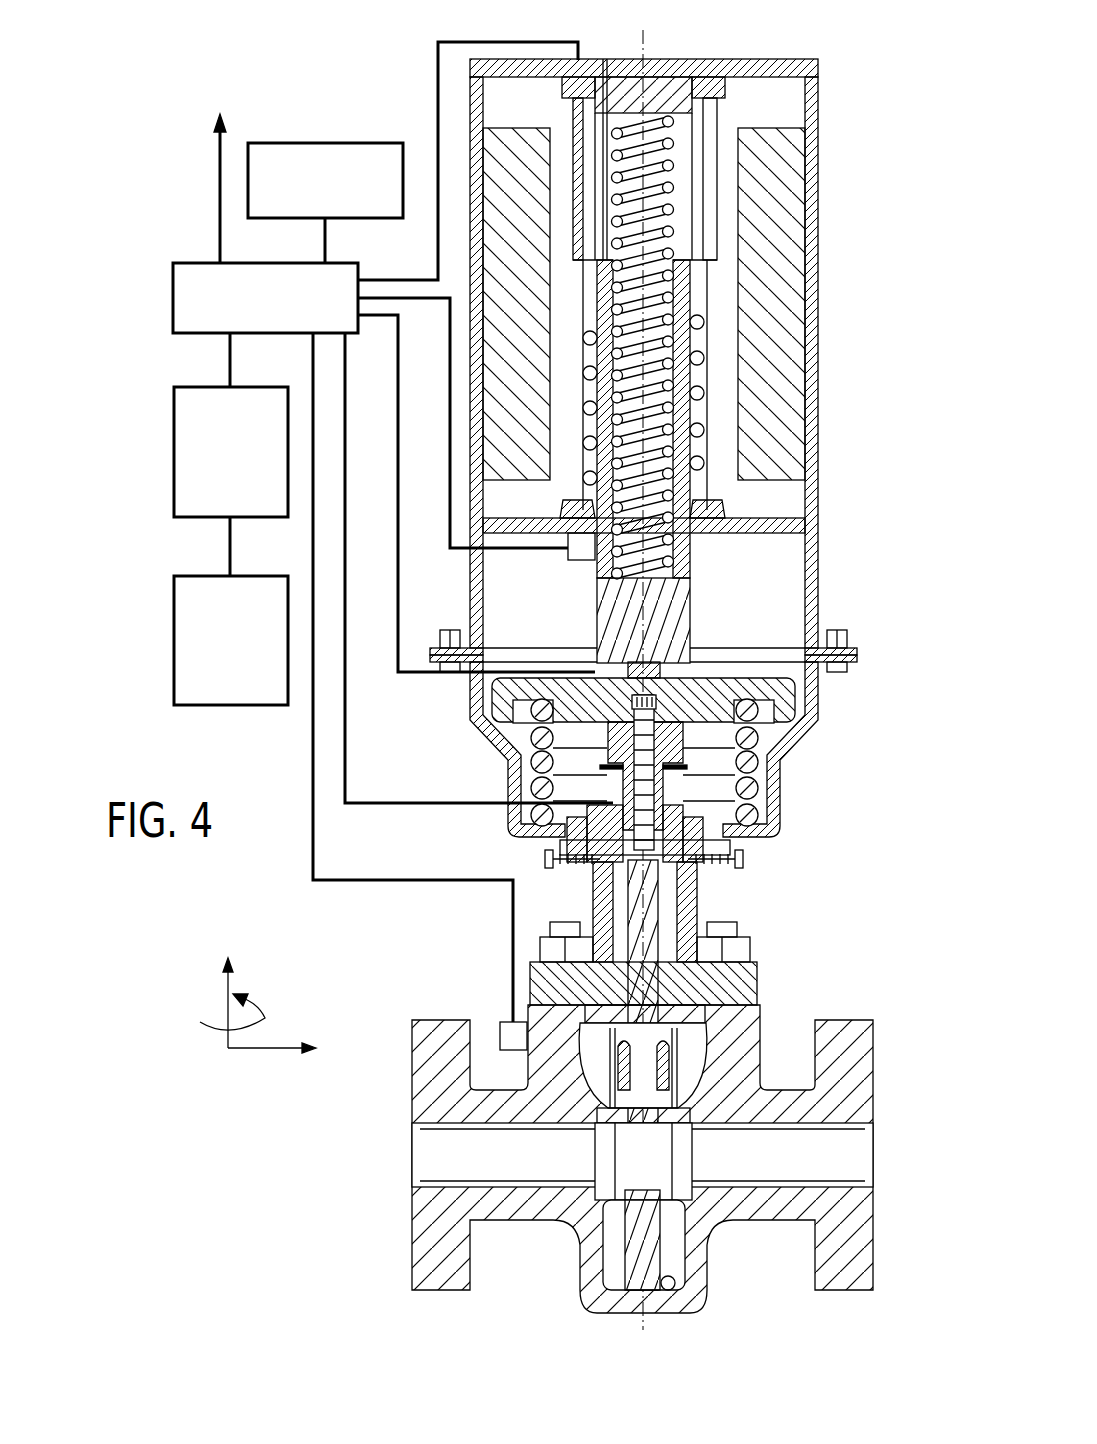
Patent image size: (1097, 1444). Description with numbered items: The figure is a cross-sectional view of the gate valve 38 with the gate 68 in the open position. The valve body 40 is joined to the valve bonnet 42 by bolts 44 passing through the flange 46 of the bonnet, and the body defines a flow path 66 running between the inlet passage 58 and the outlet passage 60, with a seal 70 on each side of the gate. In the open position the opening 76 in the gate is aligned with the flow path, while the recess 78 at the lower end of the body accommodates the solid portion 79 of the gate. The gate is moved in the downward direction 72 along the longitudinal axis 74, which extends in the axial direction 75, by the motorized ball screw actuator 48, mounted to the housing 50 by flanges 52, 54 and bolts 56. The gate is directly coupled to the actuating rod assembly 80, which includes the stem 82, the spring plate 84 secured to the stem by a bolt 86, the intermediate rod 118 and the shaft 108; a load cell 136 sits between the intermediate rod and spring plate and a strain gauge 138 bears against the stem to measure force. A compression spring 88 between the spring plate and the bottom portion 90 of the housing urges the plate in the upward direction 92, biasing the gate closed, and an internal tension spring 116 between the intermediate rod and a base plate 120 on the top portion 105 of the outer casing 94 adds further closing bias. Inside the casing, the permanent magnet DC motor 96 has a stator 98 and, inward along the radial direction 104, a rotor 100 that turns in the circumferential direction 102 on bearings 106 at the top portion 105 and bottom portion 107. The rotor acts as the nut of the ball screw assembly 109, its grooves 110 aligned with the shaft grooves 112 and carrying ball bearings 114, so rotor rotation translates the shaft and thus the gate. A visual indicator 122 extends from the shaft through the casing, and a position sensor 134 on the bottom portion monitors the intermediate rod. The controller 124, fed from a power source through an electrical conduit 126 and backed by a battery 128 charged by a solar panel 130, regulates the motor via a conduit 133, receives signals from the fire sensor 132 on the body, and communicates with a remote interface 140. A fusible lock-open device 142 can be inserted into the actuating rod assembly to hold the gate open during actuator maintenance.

The gate valve 38 is at (848, 150).
The valve body 40 is at (765, 1020).
The valve bonnet 42 is at (697, 890).
The bolts 44 is at (560, 945).
The flange 46 is at (762, 985).
The motorized ball screw actuator 48 is at (848, 68).
The housing 50 is at (815, 733).
The flange 52 is at (857, 650).
The flange 54 is at (857, 658).
The bolts 56 is at (450, 630).
The inlet passage 58 is at (420, 1290).
The outlet passage 60 is at (848, 1020).
The flow path 66 is at (445, 1150).
The gate 68 is at (680, 1200).
The seal 70 is at (615, 1140).
The direction 72 is at (760, 1135).
The longitudinal axis 74 is at (660, 905).
The axial direction 75 is at (228, 997).
The opening 76 is at (660, 1170).
The recess 78 is at (675, 1285).
The solid portion 79 is at (628, 1262).
The actuating rod assembly 80 is at (562, 660).
The stem 82 is at (635, 995).
The spring plate 84 is at (780, 690).
The bolt 86 is at (652, 760).
The compression spring 88 is at (532, 740).
The bottom portion 90 is at (725, 843).
The direction 92 is at (903, 712).
The outer casing 94 is at (812, 200).
The permanent magnet DC motor 96 is at (735, 140).
The stator 98 is at (775, 245).
The rotor 100 is at (700, 300).
The circumferential direction 102 is at (265, 1018).
The radial direction 104 is at (265, 1050).
The top portion 105 is at (795, 72).
The bearings 106 is at (712, 85).
The bottom portion 107 is at (780, 525).
The shaft 108 is at (590, 350).
The ball screw assembly 109 is at (596, 165).
The grooves 110 is at (703, 355).
The grooves 112 is at (712, 430).
The ball bearings 114 is at (703, 395).
The internal tension spring 116 is at (605, 137).
The intermediate rod 118 is at (605, 605).
The base plate 120 is at (660, 95).
The visual indicator 122 is at (605, 77).
The controller 124 is at (173, 300).
The electrical conduit 126 is at (220, 195).
The battery 128 is at (174, 445).
The solar panel 130 is at (174, 633).
The sensor 132 is at (500, 1035).
The conduit 133 is at (438, 250).
The position sensor 134 is at (578, 560).
The load cell 136 is at (665, 690).
The strain gauge 138 is at (610, 798).
The remote interface 140 is at (330, 143).
The fusible lock-open device 142 is at (545, 859).